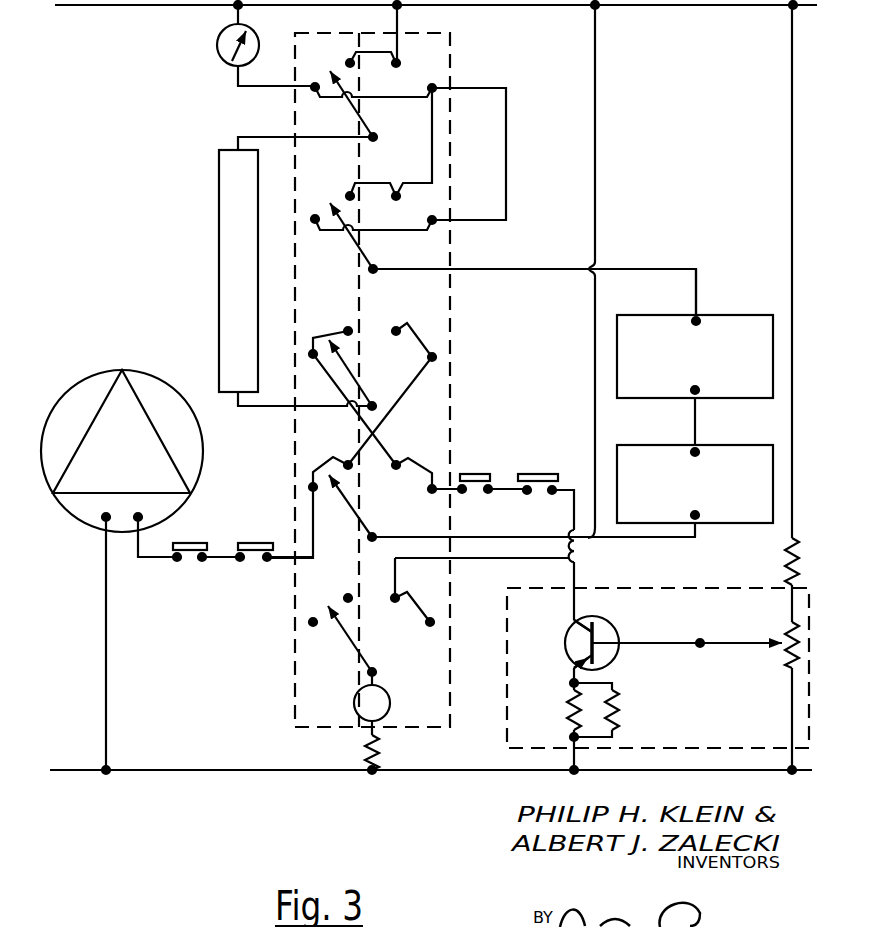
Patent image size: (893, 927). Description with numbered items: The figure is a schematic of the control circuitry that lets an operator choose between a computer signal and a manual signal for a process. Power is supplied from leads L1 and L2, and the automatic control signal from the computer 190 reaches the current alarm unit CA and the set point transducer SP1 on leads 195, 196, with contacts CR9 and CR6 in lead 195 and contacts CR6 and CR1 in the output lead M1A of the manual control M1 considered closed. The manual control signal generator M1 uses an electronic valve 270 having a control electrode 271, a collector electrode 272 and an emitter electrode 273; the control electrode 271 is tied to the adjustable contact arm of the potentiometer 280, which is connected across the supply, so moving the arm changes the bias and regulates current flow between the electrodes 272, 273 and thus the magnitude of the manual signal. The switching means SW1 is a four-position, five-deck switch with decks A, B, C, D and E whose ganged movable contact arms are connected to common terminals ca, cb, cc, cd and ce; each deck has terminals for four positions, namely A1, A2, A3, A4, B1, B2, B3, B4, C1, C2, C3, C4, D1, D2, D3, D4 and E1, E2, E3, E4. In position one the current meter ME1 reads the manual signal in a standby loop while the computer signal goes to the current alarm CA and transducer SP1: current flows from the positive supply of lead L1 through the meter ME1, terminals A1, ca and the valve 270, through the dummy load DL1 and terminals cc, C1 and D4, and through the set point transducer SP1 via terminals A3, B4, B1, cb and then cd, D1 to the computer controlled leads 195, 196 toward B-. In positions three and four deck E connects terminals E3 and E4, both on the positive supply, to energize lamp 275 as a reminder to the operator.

The power supply lead L1 is at (425, 17).
The power supply lead L2 is at (425, 758).
The meter means ME1 is at (217, 50).
The dummy load DL1 is at (219, 168).
The switching means SW1 is at (458, 67).
The deck A is at (410, 112).
The contact terminal A1 is at (309, 78).
The contact terminal A2 is at (342, 53).
The contact terminal A3 is at (408, 54).
The contact terminal A4 is at (424, 78).
The common terminal ca is at (320, 110).
The deck B is at (373, 160).
The contact terminal B1 is at (308, 210).
The contact terminal B2 is at (345, 187).
The contact terminal B3 is at (405, 185).
The contact terminal B4 is at (425, 210).
The common terminal cb is at (513, 259).
The deck C is at (372, 394).
The contact terminal C1 is at (307, 367).
The contact terminal C2 is at (337, 320).
The contact terminal C3 is at (389, 320).
The contact terminal C4 is at (416, 352).
The common terminal cc is at (335, 377).
The deck D is at (364, 507).
The contact terminal D1 is at (309, 487).
The contact terminal D2 is at (336, 454).
The contact terminal D3 is at (401, 454).
The contact terminal D4 is at (415, 492).
The common terminal cd is at (512, 510).
The deck E is at (467, 610).
The contact terminal E1 is at (308, 614).
The contact terminal E2 is at (343, 590).
The contact terminal E3 is at (384, 609).
The contact terminal E4 is at (423, 635).
The common terminal ce is at (365, 643).
The lamp 275 is at (357, 690).
The computer 190 is at (98, 372).
The lead 195 is at (165, 558).
The lead 196 is at (106, 657).
The contacts CR9 is at (204, 541).
The contacts CR6 is at (379, 508).
The contacts CR1 is at (545, 494).
The output lead M1A is at (573, 512).
The manual control means M1 is at (520, 586).
The current alarm unit CA is at (660, 313).
The set point transducer SP1 is at (677, 443).
The B- supply B- is at (762, 723).
The electronic valve 270 is at (599, 618).
The control electrode 271 is at (674, 643).
The collector electrode 272 is at (573, 632).
The emitter electrode 273 is at (571, 658).
The potentiometer 280 is at (779, 650).